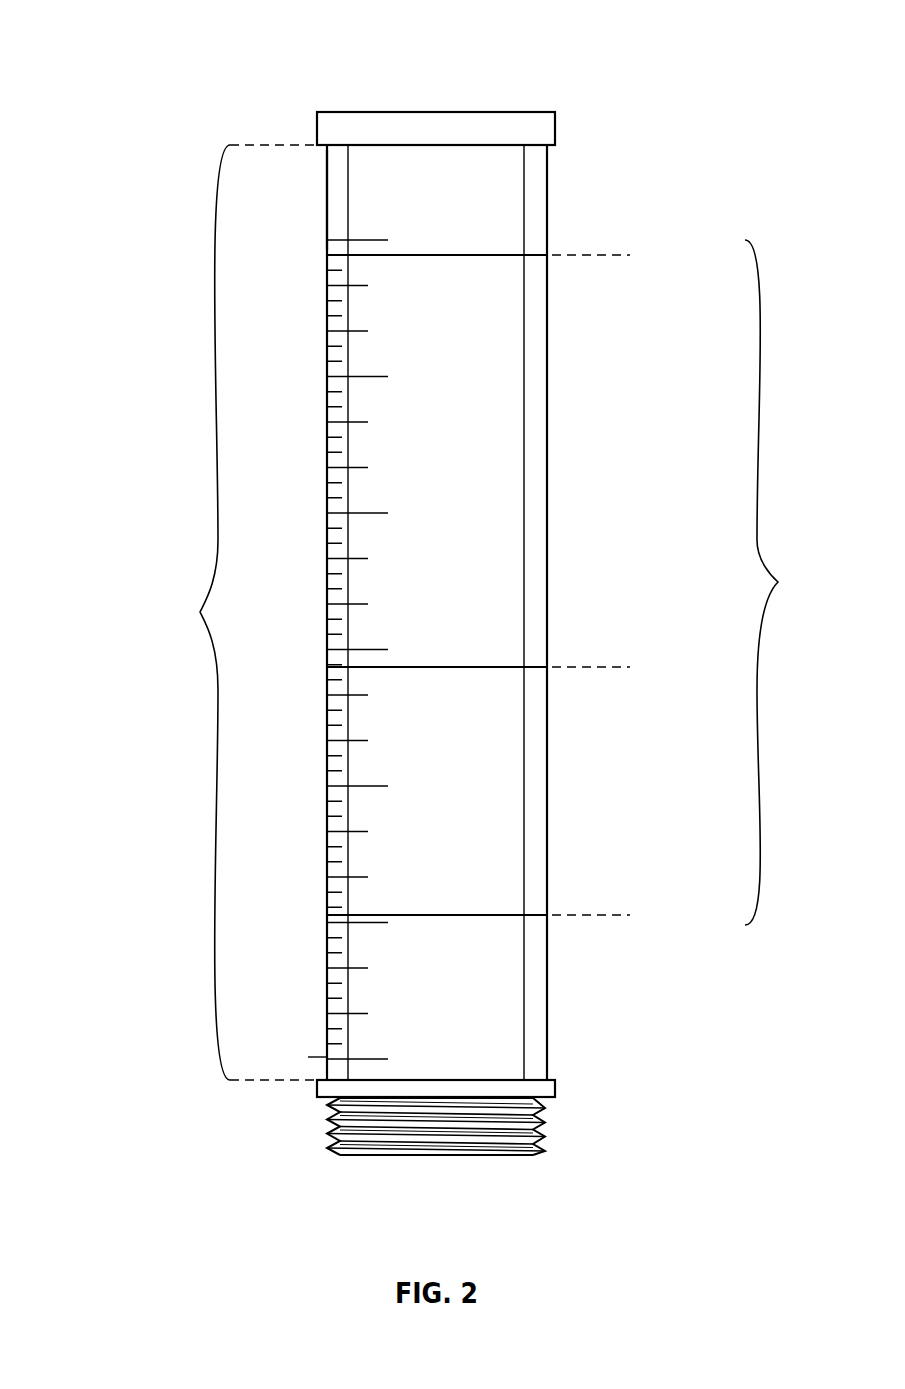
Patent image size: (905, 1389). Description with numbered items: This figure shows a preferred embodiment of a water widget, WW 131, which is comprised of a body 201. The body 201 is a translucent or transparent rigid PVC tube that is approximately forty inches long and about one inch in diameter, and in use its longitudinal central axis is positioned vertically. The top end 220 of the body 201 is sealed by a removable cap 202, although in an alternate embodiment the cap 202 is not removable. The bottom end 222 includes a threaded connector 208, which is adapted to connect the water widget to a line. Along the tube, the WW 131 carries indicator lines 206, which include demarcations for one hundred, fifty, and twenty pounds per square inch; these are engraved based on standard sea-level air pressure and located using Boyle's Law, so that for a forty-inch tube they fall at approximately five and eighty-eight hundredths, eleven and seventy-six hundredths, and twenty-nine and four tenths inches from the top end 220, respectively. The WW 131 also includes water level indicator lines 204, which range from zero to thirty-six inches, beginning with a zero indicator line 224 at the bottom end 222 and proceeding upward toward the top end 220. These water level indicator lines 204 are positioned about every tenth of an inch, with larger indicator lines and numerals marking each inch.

The water widget 131 is at (160, 44).
The body 201 is at (326, 178).
The removable cap 202 is at (349, 111).
The water level indicator lines 204 is at (232, 612).
The indicator lines 206 is at (787, 582).
The threaded connector 208 is at (552, 1130).
The top end 220 is at (552, 158).
The bottom end 222 is at (552, 1064).
The zero indicator line 224 is at (327, 1057).